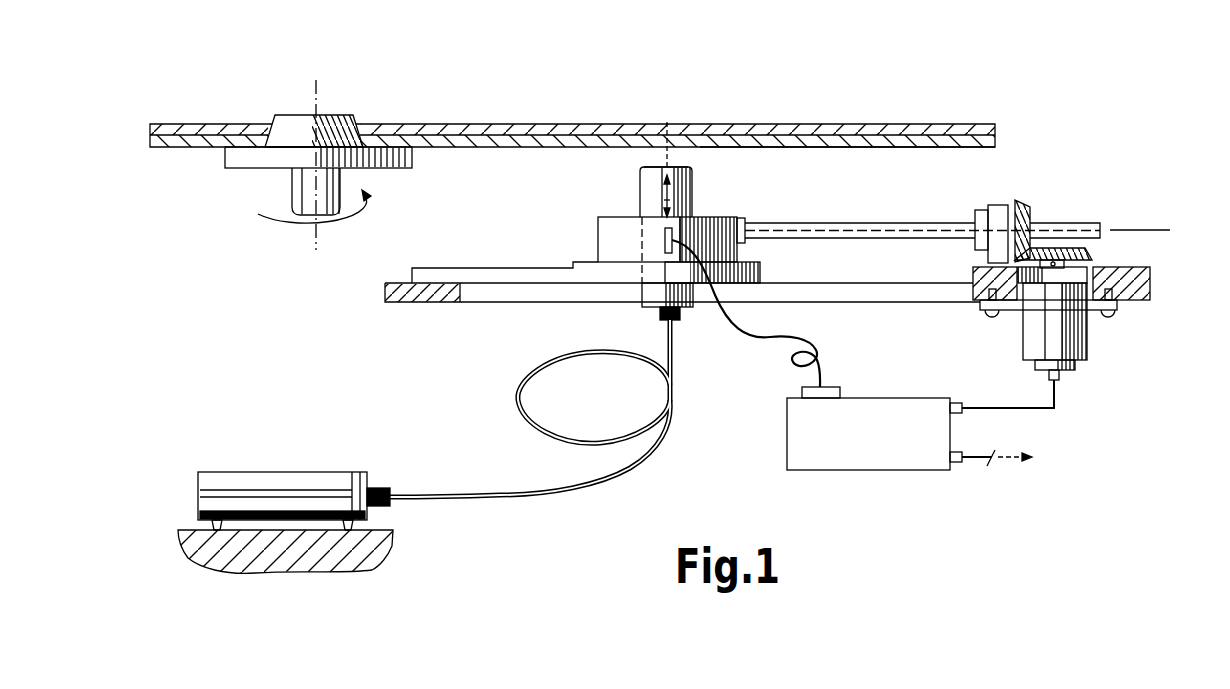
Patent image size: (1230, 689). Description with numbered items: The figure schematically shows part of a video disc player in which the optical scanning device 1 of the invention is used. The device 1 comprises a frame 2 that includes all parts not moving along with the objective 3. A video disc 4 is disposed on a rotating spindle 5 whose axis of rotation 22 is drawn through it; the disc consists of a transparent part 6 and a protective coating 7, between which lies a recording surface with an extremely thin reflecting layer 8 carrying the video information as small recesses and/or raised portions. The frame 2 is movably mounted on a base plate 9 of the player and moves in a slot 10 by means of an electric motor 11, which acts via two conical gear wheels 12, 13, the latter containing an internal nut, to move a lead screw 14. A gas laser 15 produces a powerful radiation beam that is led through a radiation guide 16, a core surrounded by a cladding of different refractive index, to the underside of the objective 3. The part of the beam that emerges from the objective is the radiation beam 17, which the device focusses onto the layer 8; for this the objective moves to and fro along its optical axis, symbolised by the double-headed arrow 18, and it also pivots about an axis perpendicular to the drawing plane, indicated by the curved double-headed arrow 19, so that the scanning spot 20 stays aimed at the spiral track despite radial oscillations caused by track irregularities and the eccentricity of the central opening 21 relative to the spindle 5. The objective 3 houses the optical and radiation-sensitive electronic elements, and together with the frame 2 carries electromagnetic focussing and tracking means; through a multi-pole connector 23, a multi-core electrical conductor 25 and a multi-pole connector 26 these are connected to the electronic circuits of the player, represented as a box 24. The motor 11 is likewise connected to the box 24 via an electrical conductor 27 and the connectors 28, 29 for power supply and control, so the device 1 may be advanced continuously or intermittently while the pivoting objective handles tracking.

The optical scanning device 1 is at (590, 226).
The frame 2 is at (734, 217).
The objective 3 is at (692, 192).
The video disc 4 is at (992, 122).
The rotating spindle 5 is at (300, 178).
The transparent part 6 is at (842, 138).
The protective coating 7 is at (822, 126).
The reflecting layer 8 is at (880, 133).
The base plate 9 is at (429, 296).
The slot 10 is at (478, 276).
The electric motor 11 is at (1062, 335).
The conical gear wheel 12 is at (1090, 257).
The conical gear wheel 13 is at (1029, 207).
The lead screw 14 is at (871, 240).
The gas laser 15 is at (283, 472).
The radiation guide 16 is at (567, 497).
The radiation beam 17 is at (665, 166).
The double-headed arrow 18 is at (667, 200).
The curved double-headed arrow 19 is at (650, 197).
The scanning spot 20 is at (667, 122).
The central opening 21 is at (360, 126).
The axis of rotation 22 is at (316, 100).
The multi-pole connector 23 is at (663, 250).
The box 24 is at (884, 445).
The multi-core electrical conductor 25 is at (770, 344).
The multi-pole connector 26 is at (842, 391).
The electrical conductor 27 is at (1019, 410).
The connector 28 is at (962, 414).
The connector 29 is at (1058, 380).